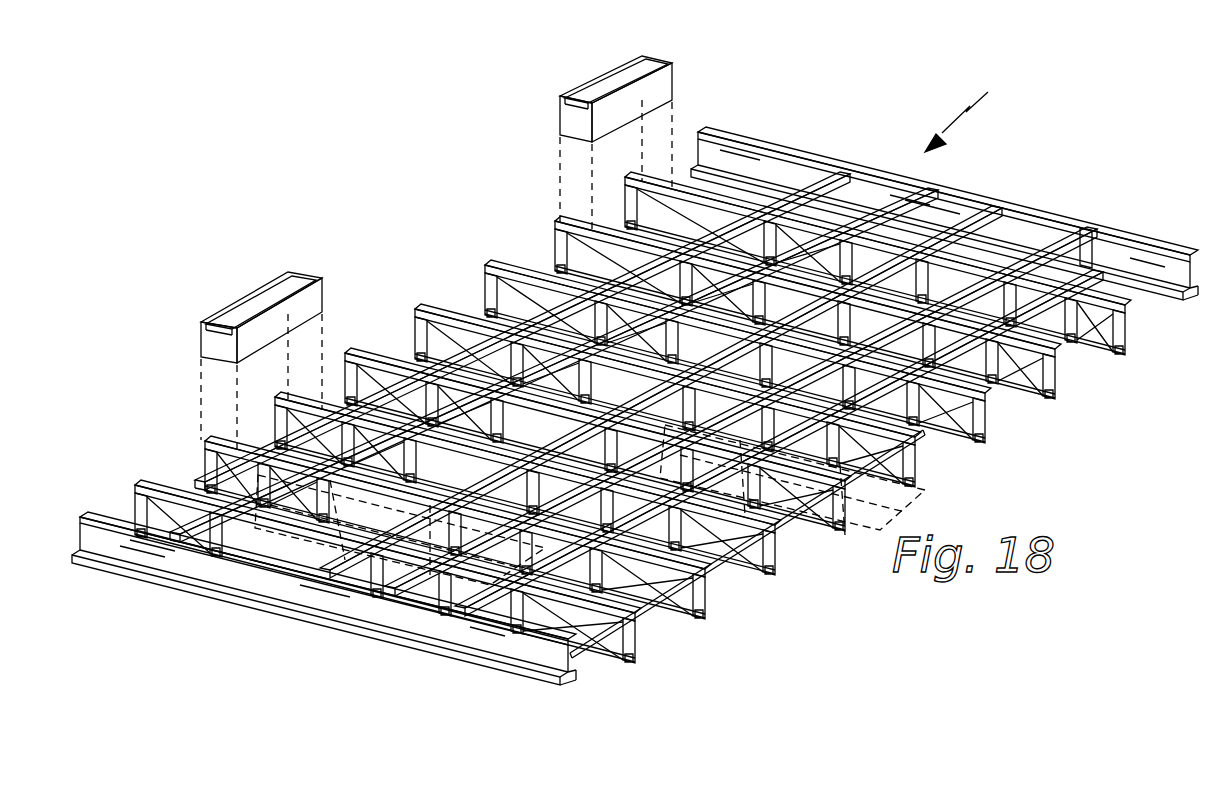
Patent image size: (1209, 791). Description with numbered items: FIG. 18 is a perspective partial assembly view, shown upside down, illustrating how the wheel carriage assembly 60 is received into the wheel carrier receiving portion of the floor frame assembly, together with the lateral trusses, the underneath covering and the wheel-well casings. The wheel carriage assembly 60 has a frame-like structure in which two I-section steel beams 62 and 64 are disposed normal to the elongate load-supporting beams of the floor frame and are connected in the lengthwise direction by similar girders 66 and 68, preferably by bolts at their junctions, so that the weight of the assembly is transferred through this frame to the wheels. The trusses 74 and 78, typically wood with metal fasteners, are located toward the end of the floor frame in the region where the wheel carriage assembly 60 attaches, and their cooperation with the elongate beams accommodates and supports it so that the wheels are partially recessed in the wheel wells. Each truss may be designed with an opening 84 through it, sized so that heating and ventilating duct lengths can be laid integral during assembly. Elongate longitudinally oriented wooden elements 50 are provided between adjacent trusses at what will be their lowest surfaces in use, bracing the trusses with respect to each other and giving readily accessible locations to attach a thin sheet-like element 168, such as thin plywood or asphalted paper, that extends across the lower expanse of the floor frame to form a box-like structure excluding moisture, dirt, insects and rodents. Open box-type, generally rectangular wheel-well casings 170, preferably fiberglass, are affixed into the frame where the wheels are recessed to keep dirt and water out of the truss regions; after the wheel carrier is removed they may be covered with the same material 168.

The elongate longitudinally oriented wooden elements 50 is at (649, 404).
The wheel carriage assembly 60 is at (969, 113).
The I-section steel beam 62 is at (466, 640).
The I-section steel beam 64 is at (990, 215).
The girder 66 is at (791, 184).
The girder 68 is at (1084, 234).
The truss 74 is at (1097, 346).
The truss 78 is at (1040, 396).
The opening 84 is at (385, 572).
The thin sheet-like element 168 is at (797, 504).
The wheel-well casing 170 is at (668, 75).